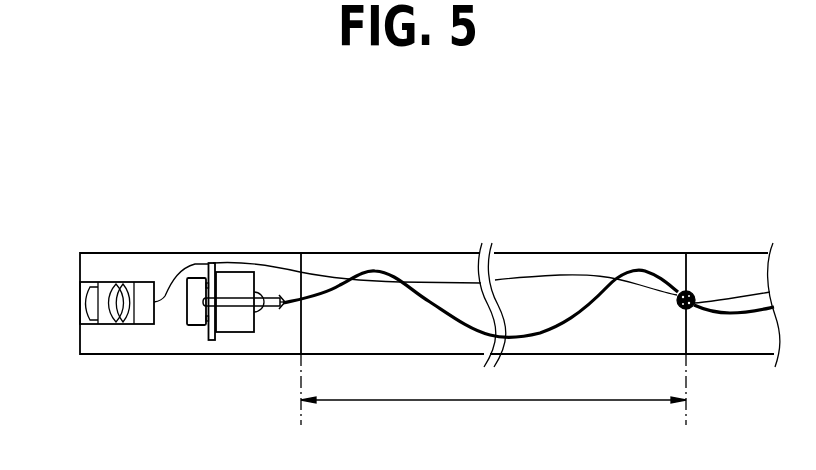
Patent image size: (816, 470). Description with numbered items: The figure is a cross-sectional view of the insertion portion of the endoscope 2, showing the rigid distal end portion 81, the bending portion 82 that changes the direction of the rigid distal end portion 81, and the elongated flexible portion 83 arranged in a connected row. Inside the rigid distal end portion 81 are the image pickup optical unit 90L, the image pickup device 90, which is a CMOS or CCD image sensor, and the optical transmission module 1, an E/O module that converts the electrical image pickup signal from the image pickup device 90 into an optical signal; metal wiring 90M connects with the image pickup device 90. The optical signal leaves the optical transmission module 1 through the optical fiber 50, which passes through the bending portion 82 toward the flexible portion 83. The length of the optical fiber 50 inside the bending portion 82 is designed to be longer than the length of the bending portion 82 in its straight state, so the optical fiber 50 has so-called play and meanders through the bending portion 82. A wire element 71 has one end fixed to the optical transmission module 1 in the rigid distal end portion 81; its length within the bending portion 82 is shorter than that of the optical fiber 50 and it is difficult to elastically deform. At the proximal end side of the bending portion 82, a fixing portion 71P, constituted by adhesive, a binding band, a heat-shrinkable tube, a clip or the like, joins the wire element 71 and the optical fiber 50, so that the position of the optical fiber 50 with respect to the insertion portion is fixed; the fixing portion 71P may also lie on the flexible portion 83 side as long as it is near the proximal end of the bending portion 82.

The endoscope 2 is at (570, 158).
The optical transmission module 1 is at (228, 333).
The optical fiber 50 is at (443, 310).
The wire element 71 is at (590, 275).
The fixing portion 71P is at (685, 291).
The rigid distal end portion 81 is at (182, 252).
The bending portion 82 is at (500, 252).
The flexible portion 83 is at (728, 252).
The image pickup device 90 is at (145, 325).
The image pickup optical unit 90L is at (106, 325).
The metal wiring 90M is at (166, 300).